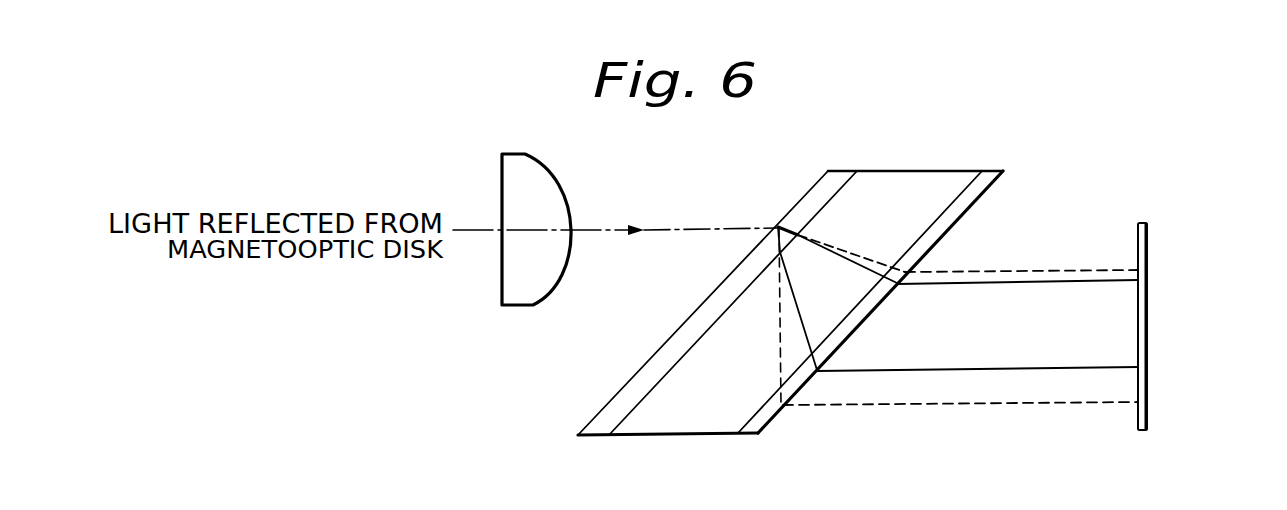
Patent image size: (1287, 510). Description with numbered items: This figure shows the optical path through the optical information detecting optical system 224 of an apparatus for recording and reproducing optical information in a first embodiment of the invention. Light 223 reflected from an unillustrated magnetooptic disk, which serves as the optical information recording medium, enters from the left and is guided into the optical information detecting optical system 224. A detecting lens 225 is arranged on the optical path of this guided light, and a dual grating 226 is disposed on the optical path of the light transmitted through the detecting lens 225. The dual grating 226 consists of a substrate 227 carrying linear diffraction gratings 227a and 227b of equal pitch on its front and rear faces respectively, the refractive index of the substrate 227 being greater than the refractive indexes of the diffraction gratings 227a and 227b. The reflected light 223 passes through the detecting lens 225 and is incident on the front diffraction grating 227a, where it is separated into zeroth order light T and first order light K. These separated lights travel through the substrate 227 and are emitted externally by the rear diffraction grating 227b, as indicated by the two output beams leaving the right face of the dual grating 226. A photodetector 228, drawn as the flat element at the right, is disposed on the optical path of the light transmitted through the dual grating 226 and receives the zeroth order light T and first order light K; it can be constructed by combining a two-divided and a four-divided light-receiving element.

The light reflected from magnetooptic disk 223 is at (466, 229).
The optical information detecting optical system 224 is at (659, 208).
The detecting lens 225 is at (525, 153).
The dual grating 226 is at (768, 300).
The substrate 227 is at (697, 413).
The diffraction grating (front side) 227a is at (640, 372).
The diffraction grating (rear side) 227b is at (773, 410).
The photodetector 228 is at (1148, 245).
The zeroth order light T is at (1043, 281).
The first order light K is at (1023, 370).